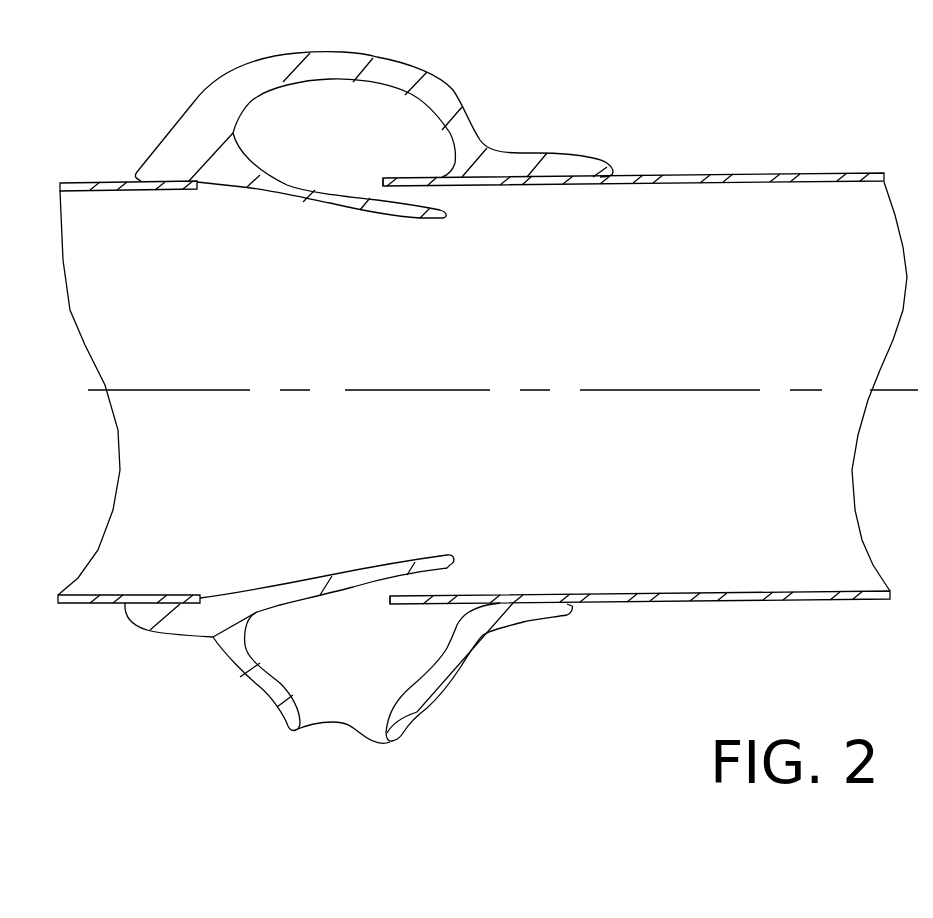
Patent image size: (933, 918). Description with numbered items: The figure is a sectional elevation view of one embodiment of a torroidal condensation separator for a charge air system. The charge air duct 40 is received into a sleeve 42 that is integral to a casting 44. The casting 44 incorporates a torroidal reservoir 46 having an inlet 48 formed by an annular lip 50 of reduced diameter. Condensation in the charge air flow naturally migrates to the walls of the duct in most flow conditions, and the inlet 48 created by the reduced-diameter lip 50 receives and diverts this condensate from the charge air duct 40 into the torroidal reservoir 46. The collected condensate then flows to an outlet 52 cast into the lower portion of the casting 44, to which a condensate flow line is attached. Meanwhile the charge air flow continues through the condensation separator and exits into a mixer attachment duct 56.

The charge air duct 40 is at (722, 175).
The sleeve 42 is at (540, 150).
The casting 44 is at (502, 100).
The torroidal reservoir 46 is at (342, 130).
The inlet 48 is at (463, 197).
The annular lip 50 is at (323, 208).
The outlet 52 is at (337, 727).
The mixer attachment duct 56 is at (77, 182).